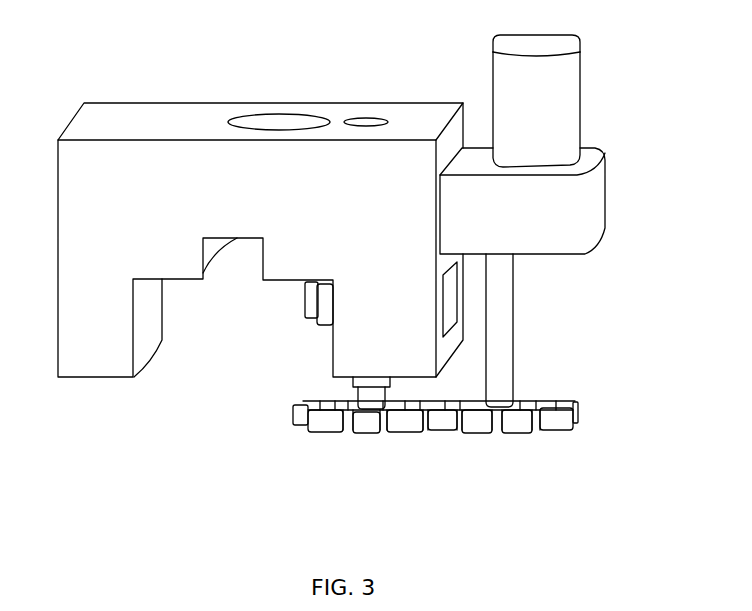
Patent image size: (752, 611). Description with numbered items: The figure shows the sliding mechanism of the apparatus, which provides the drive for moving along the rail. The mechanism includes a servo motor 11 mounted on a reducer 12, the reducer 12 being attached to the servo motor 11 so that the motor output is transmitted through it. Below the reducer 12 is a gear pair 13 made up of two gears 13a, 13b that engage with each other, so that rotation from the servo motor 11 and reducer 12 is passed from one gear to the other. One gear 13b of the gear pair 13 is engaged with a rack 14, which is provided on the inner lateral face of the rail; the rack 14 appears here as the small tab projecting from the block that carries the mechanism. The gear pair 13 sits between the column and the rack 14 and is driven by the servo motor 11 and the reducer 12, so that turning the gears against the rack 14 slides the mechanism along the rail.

The servo motor 11 is at (560, 110).
The reducer 12 is at (543, 228).
The gear pair 13 is at (377, 432).
The gear 13a is at (563, 433).
The gear 13b is at (305, 417).
The rack 14 is at (312, 304).